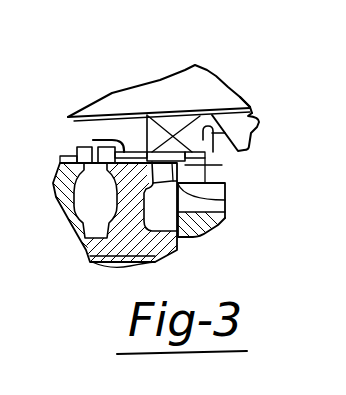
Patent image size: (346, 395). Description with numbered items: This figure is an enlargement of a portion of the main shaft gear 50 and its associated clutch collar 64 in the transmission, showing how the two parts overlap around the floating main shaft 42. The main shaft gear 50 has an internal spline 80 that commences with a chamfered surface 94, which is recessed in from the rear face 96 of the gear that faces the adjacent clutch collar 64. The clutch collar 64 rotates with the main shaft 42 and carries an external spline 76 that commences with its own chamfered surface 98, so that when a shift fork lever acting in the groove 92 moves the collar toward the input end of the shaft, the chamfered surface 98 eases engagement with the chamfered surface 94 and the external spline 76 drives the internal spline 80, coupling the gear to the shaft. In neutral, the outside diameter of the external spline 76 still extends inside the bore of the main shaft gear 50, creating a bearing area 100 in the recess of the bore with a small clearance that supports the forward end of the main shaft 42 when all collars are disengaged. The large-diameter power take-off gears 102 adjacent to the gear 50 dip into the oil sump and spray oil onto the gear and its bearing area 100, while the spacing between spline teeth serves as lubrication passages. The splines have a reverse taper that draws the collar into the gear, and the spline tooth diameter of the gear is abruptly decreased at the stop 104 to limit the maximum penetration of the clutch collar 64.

The floating main shaft 42 is at (184, 97).
The main shaft gear 50 is at (158, 256).
The clutch collar 64 is at (261, 123).
The external spline 76 is at (229, 198).
The internal spline 80 is at (134, 150).
The groove 92 is at (228, 135).
The chamfered surface 94 is at (165, 152).
The rear face 96 is at (160, 196).
The chamfered surface 98 is at (95, 200).
The bearing area 100 is at (243, 107).
The power take-off gears 102 is at (209, 234).
The stop 104 is at (93, 140).